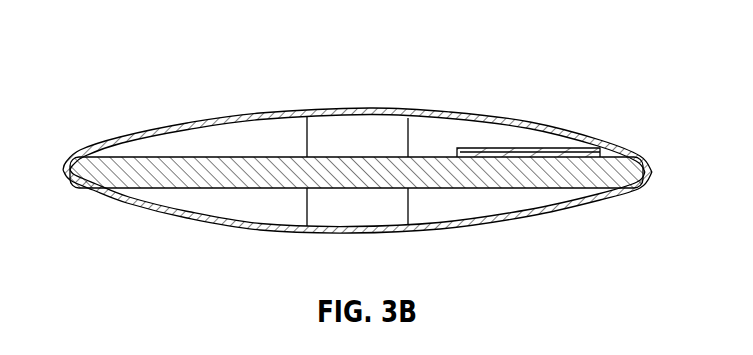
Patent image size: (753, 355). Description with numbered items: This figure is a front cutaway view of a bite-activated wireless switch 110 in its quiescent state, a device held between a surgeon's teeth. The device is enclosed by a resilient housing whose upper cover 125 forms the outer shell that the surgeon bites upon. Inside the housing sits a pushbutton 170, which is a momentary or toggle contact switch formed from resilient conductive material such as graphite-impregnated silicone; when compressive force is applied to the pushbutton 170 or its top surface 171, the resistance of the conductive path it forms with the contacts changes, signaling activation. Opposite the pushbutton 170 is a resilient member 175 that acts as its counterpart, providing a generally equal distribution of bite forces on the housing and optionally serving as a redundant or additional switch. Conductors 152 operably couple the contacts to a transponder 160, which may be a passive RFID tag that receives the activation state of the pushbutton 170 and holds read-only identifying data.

The bite-activated wireless switch 110 is at (182, 74).
The upper cover 125 is at (187, 123).
The pushbutton 170 is at (375, 127).
The top surface 171 is at (333, 117).
The resilient member 175 is at (377, 218).
The conductors 152 is at (473, 152).
The transponder 160 is at (575, 152).